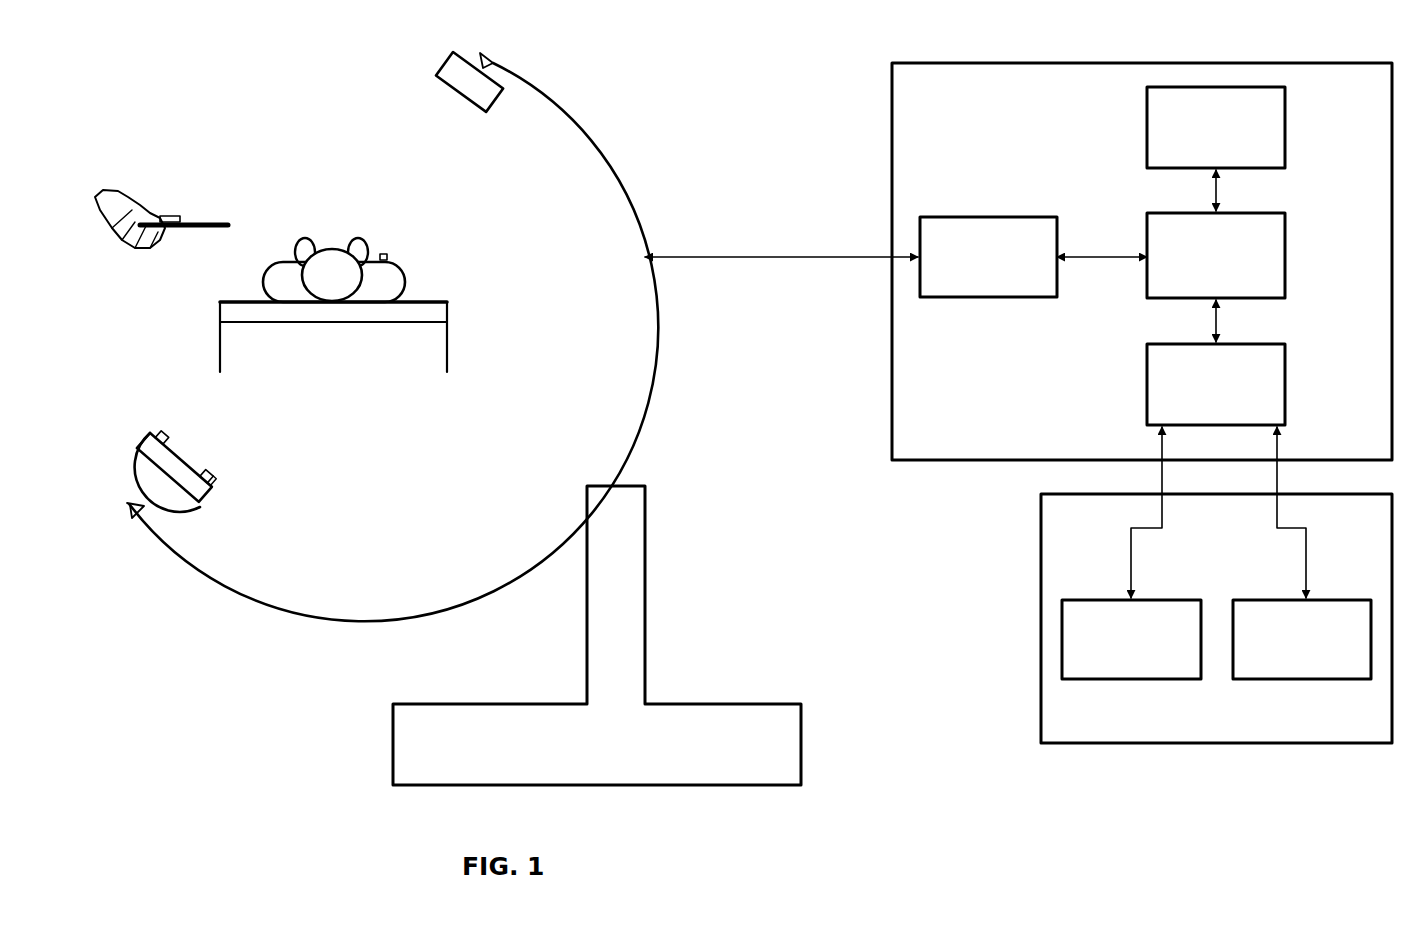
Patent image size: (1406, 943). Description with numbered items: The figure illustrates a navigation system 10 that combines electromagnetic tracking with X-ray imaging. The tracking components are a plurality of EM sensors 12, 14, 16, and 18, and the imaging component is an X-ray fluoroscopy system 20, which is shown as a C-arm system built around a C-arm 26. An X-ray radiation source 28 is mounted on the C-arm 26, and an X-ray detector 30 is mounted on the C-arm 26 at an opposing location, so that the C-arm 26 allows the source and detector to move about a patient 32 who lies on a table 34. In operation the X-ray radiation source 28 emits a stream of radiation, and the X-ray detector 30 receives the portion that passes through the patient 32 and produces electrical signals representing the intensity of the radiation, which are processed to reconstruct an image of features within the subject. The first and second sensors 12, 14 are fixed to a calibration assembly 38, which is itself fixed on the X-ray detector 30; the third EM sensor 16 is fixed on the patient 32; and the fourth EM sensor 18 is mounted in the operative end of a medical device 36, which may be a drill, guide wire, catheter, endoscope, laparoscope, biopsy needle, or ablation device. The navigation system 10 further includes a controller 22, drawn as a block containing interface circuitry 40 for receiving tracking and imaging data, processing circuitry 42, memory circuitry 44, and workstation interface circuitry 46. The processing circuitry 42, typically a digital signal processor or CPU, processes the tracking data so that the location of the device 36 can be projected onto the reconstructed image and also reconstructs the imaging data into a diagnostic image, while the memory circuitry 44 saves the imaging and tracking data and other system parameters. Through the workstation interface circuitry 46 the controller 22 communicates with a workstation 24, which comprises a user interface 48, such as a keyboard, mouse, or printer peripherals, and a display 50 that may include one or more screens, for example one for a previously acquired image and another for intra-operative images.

The navigation system 10 is at (232, 55).
The first EM sensor 12 is at (194, 454).
The second EM sensor 14 is at (241, 469).
The third EM sensor 16 is at (387, 256).
The fourth EM sensor 18 is at (170, 216).
The X-ray fluoroscopy system 20 is at (660, 142).
The controller 22 is at (900, 62).
The workstation 24 is at (1040, 562).
The C-arm 26 is at (566, 116).
The X-ray radiation source 28 is at (444, 63).
The X-ray detector 30 is at (204, 436).
The patient 32 is at (333, 250).
The table 34 is at (447, 328).
The medical device 36 is at (169, 223).
The calibration assembly 38 is at (206, 438).
The interface circuitry 40 is at (992, 217).
The processing circuitry 42 is at (1285, 248).
The memory circuitry 44 is at (1285, 113).
The workstation interface circuitry 46 is at (1285, 374).
The user interface 48 is at (1112, 681).
The display 50 is at (1284, 681).